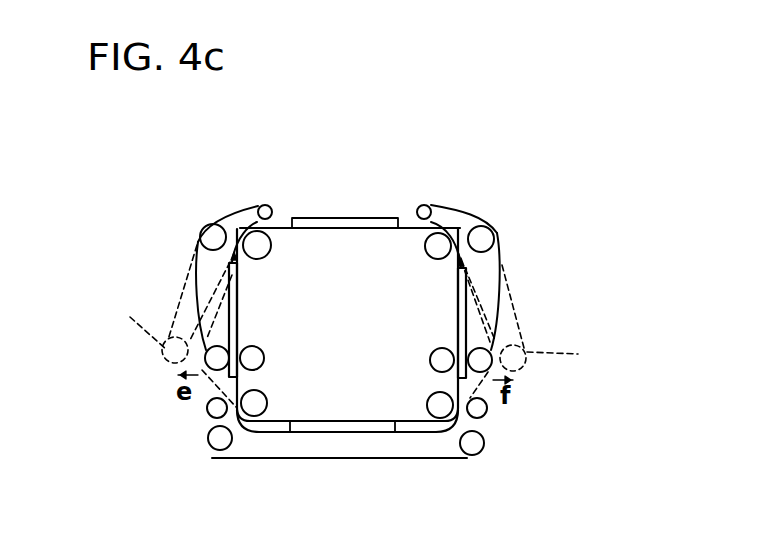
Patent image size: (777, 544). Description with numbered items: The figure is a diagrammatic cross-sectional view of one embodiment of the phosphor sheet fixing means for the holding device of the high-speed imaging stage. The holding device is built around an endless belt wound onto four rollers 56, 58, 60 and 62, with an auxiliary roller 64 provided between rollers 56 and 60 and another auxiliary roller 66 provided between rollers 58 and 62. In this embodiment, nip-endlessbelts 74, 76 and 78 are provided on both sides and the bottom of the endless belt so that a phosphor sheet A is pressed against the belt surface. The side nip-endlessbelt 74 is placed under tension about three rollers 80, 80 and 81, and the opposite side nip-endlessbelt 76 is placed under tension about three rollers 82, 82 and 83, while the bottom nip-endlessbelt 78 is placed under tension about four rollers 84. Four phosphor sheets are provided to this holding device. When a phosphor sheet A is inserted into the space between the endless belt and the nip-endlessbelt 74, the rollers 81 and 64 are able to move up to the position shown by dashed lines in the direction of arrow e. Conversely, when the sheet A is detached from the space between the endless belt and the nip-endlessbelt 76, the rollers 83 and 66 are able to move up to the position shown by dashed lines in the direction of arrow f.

The roller 56 is at (257, 245).
The roller 58 is at (438, 246).
The roller 60 is at (254, 403).
The roller 62 is at (440, 405).
The auxiliary roller 64 is at (252, 358).
The auxiliary roller 66 is at (442, 360).
The nip-endlessbelt 74 is at (233, 215).
The nip-endlessbelt 76 is at (458, 210).
The nip-endlessbelt 78 is at (357, 462).
The roller 80 is at (213, 237).
The roller 81 is at (210, 350).
The roller 82 is at (423, 208).
The roller 83 is at (493, 342).
The roller 84 is at (209, 414).
The phosphor sheet A is at (353, 223).